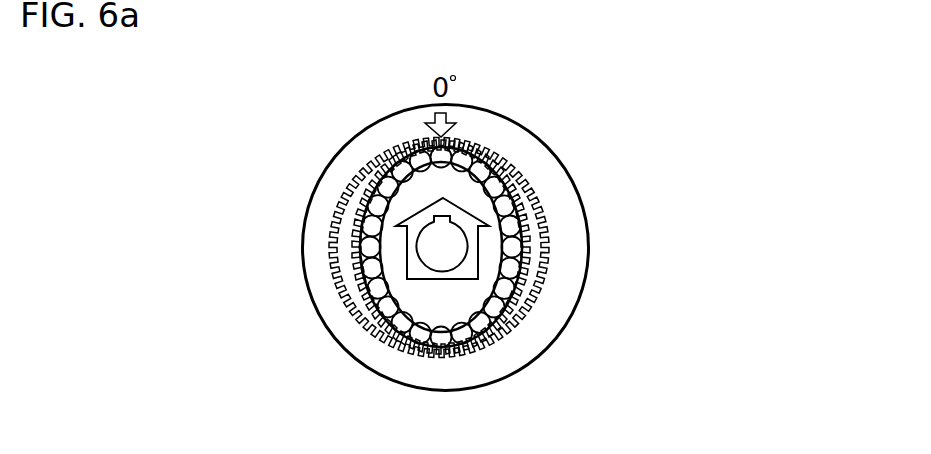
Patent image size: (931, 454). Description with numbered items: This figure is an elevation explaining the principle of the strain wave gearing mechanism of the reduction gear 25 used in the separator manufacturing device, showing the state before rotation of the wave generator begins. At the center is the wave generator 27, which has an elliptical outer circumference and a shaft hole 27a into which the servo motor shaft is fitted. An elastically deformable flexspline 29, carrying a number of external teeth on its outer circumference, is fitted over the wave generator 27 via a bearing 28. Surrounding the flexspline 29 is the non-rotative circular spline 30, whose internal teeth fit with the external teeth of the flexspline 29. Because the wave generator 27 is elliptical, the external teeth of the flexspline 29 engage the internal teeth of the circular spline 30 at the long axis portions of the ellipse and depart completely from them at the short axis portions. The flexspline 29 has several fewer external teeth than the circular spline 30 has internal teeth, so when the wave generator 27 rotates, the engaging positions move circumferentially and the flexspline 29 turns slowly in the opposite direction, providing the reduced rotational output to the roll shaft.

The reduction gear 25 is at (303, 334).
The wave generator 27 is at (487, 260).
The shaft hole 27a is at (435, 250).
The bearing 28 is at (519, 223).
The flexspline 29 is at (511, 164).
The circular spline 30 is at (553, 177).